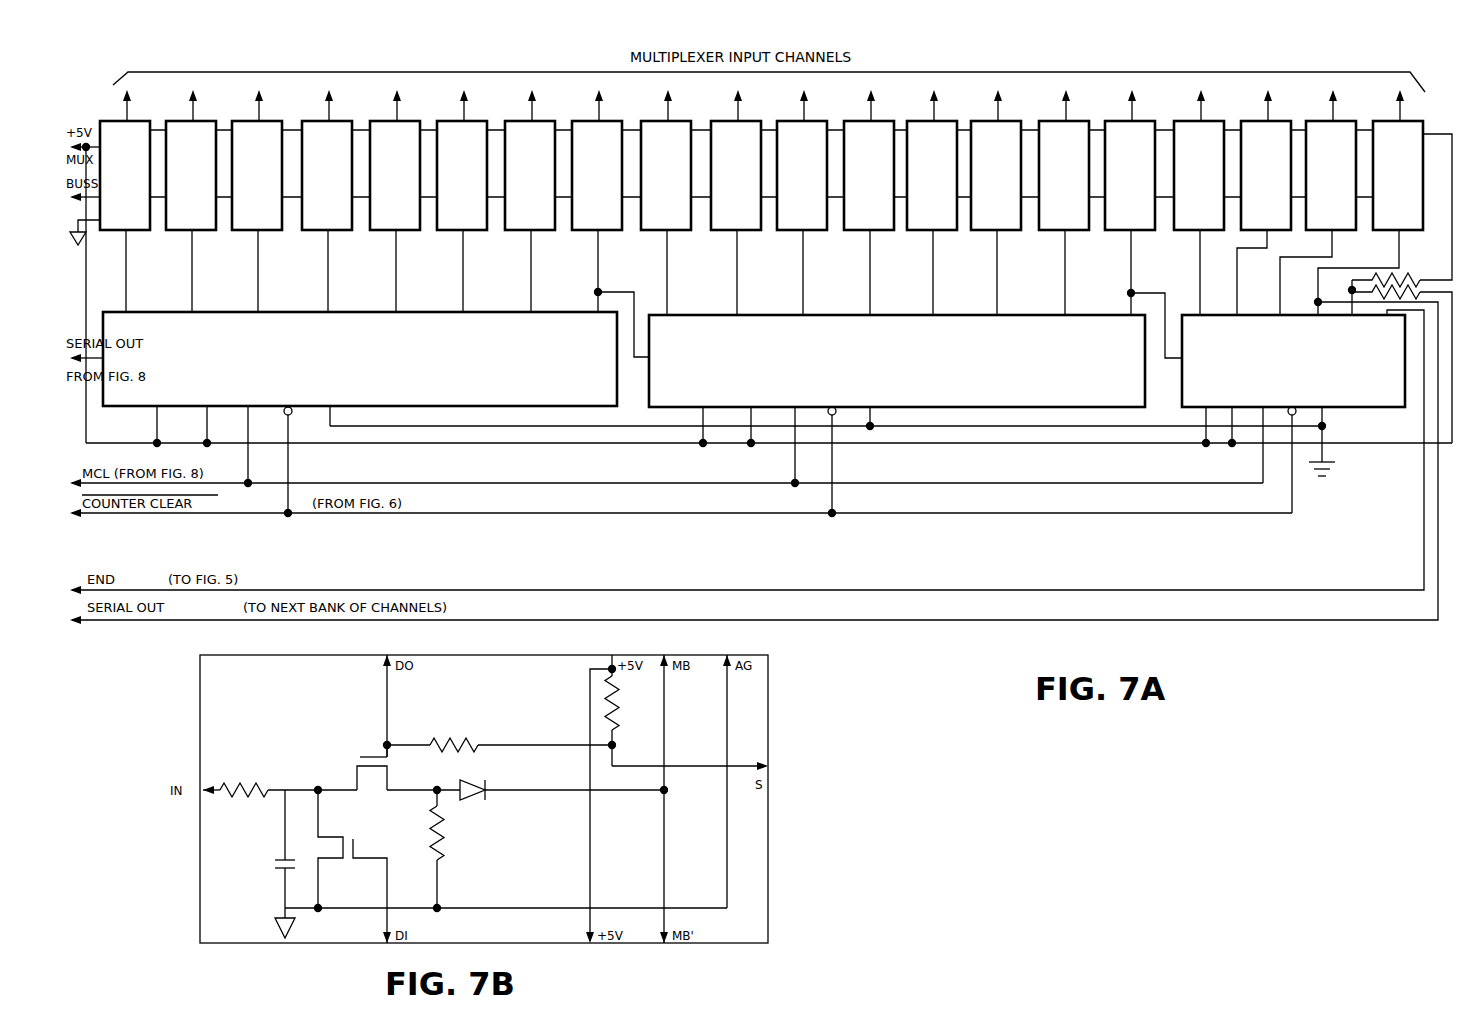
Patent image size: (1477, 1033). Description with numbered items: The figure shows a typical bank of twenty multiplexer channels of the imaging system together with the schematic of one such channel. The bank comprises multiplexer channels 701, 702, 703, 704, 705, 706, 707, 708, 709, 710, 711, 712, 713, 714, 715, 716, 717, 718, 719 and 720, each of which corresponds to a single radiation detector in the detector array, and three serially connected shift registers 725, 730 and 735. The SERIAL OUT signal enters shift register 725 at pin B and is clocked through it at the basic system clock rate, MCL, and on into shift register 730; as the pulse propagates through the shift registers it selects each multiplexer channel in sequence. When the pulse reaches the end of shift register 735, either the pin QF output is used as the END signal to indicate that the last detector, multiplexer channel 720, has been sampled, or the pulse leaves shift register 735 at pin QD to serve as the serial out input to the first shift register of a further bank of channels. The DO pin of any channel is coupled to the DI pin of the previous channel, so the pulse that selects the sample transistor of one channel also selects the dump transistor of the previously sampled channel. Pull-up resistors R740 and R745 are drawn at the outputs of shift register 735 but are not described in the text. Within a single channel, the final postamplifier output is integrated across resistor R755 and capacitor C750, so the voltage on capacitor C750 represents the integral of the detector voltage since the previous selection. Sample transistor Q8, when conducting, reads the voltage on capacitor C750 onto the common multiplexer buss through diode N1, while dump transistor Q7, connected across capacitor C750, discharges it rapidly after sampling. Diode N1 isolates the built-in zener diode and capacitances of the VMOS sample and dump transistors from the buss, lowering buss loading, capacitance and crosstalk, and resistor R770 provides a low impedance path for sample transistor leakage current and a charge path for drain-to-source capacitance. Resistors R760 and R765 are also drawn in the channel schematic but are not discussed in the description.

In FIG. 7A, the multiplexer channel 701 is at (128, 232).
In FIG. 7A, the multiplexer channel 702 is at (194, 232).
In FIG. 7A, the multiplexer channel 703 is at (260, 232).
In FIG. 7A, the multiplexer channel 704 is at (330, 232).
In FIG. 7A, the multiplexer channel 705 is at (398, 232).
In FIG. 7A, the multiplexer channel 706 is at (465, 232).
In FIG. 7A, the multiplexer channel 707 is at (533, 232).
In FIG. 7A, the multiplexer channel 708 is at (600, 232).
In FIG. 7A, the multiplexer channel 709 is at (669, 232).
In FIG. 7A, the multiplexer channel 710 is at (739, 232).
In FIG. 7A, the multiplexer channel 711 is at (805, 232).
In FIG. 7A, the multiplexer channel 712 is at (872, 232).
In FIG. 7A, the multiplexer channel 713 is at (935, 232).
In FIG. 7A, the multiplexer channel 714 is at (999, 232).
In FIG. 7A, the multiplexer channel 715 is at (1067, 232).
In FIG. 7A, the multiplexer channel 716 is at (1133, 232).
In FIG. 7A, the multiplexer channel 717 is at (1202, 232).
In FIG. 7A, the multiplexer channel 718 is at (1272, 232).
In FIG. 7A, the multiplexer channel 719 is at (1342, 121).
In FIG. 7A, the multiplexer channel 720 is at (1410, 121).
In FIG. 7A, the shift register 725 is at (368, 312).
In FIG. 7A, the shift register 730 is at (844, 314).
In FIG. 7A, the shift register 735 is at (1192, 312).
In FIG. 7A, the resistor R740 is at (1401, 280).
In FIG. 7A, the resistor R745 is at (1394, 276).
In FIG. 7B, the capacitor C750 is at (282, 856).
In FIG. 7B, the resistor R755 is at (246, 783).
In FIG. 7B, the resistor R760 is at (465, 740).
In FIG. 7B, the resistor R765 is at (615, 722).
In FIG. 7B, the resistor R770 is at (444, 838).
In FIG. 7B, the dump transistor Q7 is at (357, 850).
In FIG. 7B, the sample transistor Q8 is at (361, 757).
In FIG. 7B, the diode N1 is at (472, 779).